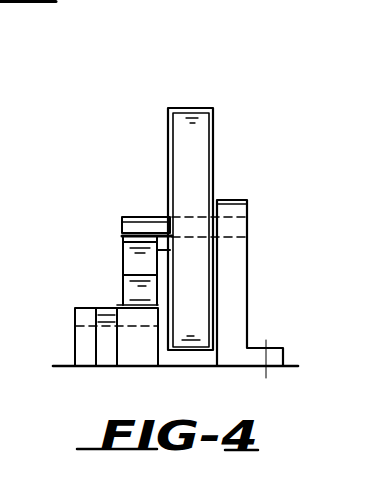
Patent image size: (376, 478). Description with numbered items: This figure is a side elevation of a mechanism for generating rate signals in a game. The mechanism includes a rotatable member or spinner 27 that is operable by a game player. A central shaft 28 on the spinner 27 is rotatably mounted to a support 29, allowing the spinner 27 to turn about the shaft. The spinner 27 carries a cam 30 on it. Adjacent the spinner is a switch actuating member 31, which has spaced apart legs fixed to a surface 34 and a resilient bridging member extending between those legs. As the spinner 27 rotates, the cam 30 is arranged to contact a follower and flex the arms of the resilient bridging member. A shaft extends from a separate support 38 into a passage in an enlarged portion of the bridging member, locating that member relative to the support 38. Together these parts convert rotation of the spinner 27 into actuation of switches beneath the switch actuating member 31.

The spinner 27 is at (195, 106).
The central shaft 28 is at (132, 217).
The support 29 is at (240, 285).
The cam 30 is at (122, 239).
The switch actuating member 31 is at (107, 308).
The surface 34 is at (55, 366).
The support 38 is at (80, 338).